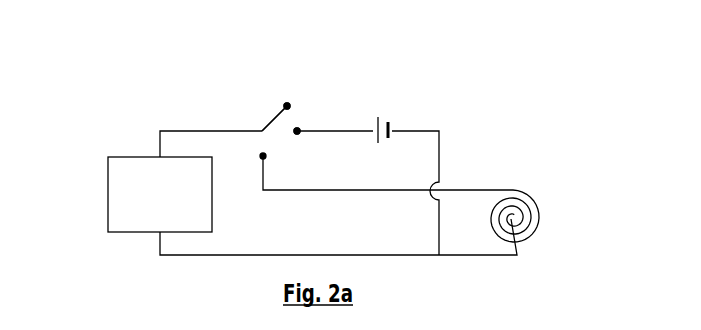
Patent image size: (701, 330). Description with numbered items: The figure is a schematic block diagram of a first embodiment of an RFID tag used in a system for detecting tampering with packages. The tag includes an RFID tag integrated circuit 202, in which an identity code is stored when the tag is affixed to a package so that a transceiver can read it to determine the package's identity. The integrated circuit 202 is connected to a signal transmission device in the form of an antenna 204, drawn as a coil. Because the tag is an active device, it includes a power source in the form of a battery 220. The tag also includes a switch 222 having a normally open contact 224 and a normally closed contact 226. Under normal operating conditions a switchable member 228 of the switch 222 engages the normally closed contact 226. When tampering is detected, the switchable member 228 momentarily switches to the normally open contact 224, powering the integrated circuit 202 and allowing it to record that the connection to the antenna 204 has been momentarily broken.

The RFID tag integrated circuit 202 is at (125, 235).
The antenna 204 is at (543, 202).
The battery 220 is at (385, 108).
The switch 222 is at (302, 93).
The normally open contact 224 is at (307, 130).
The normally closed contact 226 is at (267, 157).
The switchable member 228 is at (273, 118).